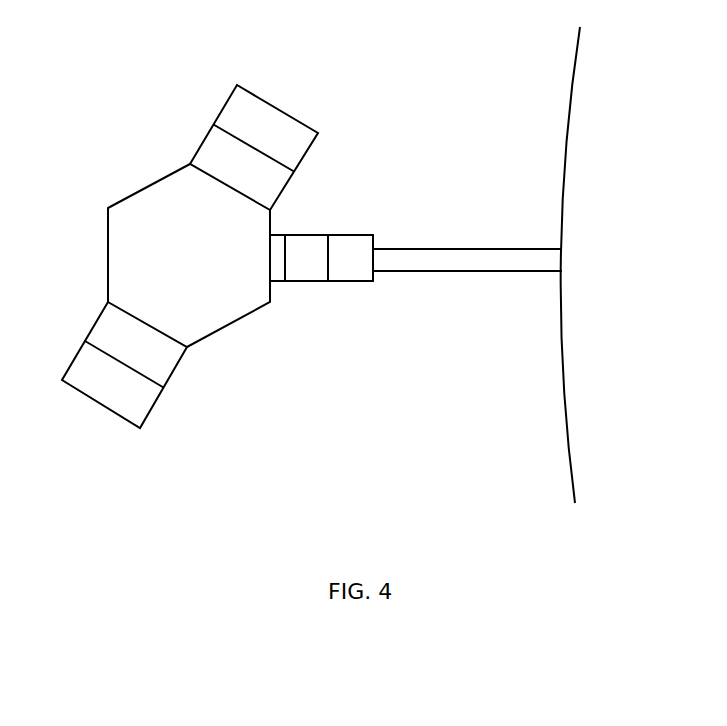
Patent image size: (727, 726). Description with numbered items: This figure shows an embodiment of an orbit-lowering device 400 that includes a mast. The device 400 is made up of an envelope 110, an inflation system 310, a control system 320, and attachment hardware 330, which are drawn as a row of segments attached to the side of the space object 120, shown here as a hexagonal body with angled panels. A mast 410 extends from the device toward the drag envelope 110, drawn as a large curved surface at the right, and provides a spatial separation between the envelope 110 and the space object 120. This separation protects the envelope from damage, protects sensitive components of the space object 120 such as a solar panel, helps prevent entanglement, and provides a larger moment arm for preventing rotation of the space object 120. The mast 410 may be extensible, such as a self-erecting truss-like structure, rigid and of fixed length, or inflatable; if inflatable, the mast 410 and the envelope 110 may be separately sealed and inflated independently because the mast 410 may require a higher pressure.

The drag envelope 110 is at (575, 69).
The space object 120 is at (148, 185).
The inflation system 310 is at (352, 282).
The control system 320 is at (307, 282).
The attachment hardware 330 is at (277, 282).
The orbit-lowering device 400 is at (305, 483).
The mast 410 is at (527, 273).